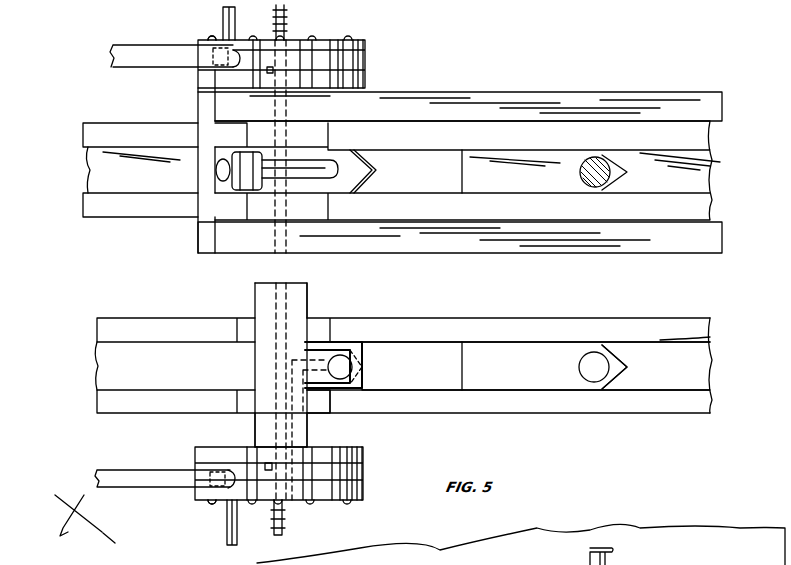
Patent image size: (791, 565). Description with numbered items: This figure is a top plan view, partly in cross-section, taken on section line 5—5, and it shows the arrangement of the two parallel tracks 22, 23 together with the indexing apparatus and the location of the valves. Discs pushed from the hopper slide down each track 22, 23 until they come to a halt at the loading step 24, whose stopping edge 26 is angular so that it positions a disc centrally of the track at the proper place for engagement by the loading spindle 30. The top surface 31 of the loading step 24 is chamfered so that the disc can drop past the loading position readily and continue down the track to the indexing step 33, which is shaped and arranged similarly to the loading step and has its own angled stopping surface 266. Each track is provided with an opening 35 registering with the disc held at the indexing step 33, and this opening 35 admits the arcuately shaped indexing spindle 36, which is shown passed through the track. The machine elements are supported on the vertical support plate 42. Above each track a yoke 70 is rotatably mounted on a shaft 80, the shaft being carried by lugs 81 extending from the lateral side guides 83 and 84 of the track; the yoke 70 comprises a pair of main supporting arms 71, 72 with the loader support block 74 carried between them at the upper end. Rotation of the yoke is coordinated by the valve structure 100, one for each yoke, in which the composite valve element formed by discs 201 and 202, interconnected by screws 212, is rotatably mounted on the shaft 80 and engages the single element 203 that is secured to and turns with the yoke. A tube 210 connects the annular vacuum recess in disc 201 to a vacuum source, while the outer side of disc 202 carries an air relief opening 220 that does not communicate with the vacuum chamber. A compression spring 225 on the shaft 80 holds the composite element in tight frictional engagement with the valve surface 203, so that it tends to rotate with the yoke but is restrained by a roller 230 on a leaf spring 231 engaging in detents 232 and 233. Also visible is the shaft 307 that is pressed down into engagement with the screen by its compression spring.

The section line 5 is at (74, 519).
The track 22 is at (150, 395).
The track 23 is at (145, 190).
The loading step 24 is at (453, 158).
The stopping edge 26 is at (370, 172).
The loading spindle 30 is at (334, 168).
The chamfered upper surface 31 is at (460, 182).
The indexing step 33 is at (668, 356).
The opening 35 is at (581, 173).
The indexing spindle 36 is at (592, 157).
The vertical support plate 42 is at (652, 532).
The yoke 70 is at (225, 424).
The main supporting arm 71 is at (722, 245).
The main supporting arm 72 is at (722, 108).
The loader support block 74 is at (205, 128).
The shaft 80 is at (275, 22).
The lug 81 is at (315, 408).
The lateral side guide 83 is at (90, 198).
The lateral side guide 84 is at (88, 130).
The valve structure 100 is at (386, 65).
The disc of valve element 201 is at (363, 52).
The disc of valve element 202 is at (372, 62).
The single valve element 203 is at (365, 86).
The tube 210 is at (223, 22).
The screw 212 is at (350, 36).
The air relief opening 220 is at (268, 74).
The compression spring 225 is at (288, 33).
The roller 230 is at (215, 70).
The leaf spring 231 is at (128, 50).
The detent 232 is at (257, 86).
The detent 233 is at (207, 38).
The chevron marking 266 is at (600, 388).
The shaft 307 is at (588, 557).